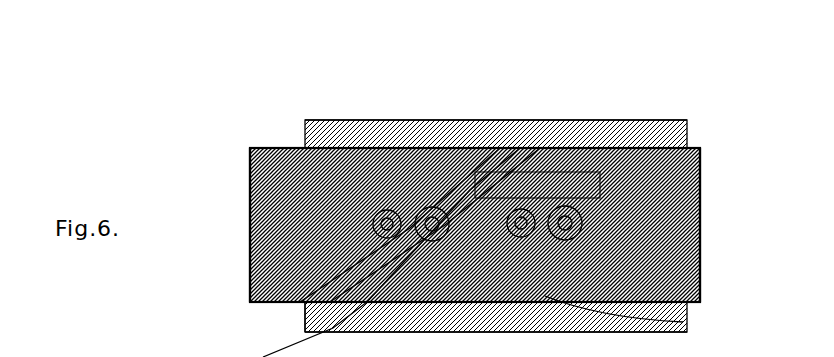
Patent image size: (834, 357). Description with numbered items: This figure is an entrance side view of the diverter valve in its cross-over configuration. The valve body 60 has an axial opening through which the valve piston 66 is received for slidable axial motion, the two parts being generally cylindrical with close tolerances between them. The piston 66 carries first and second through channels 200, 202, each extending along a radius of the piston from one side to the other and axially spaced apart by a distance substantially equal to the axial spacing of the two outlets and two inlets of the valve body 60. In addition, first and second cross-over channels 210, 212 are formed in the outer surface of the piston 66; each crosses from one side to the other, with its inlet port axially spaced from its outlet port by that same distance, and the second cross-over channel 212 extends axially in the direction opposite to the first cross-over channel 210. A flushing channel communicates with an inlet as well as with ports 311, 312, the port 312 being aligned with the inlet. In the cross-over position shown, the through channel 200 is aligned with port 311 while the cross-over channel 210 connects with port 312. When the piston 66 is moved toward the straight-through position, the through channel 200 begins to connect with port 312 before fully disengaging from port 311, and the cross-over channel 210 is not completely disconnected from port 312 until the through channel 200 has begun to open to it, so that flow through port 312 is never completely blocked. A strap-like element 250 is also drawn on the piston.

The first through channel 200 is at (413, 118).
The second through channel 202 is at (593, 118).
The first cross-over channel 210 is at (473, 118).
The second cross-over channel 212 is at (683, 322).
The strap 250 is at (513, 118).
The valve body 60 is at (555, 118).
The valve piston 66 is at (705, 172).
The port 311 is at (250, 252).
The port 312 is at (313, 311).